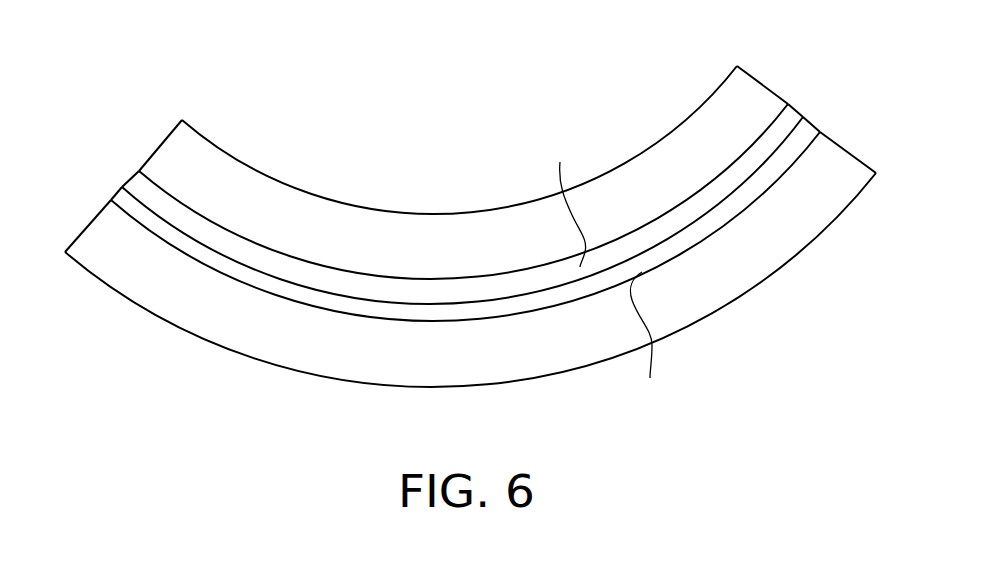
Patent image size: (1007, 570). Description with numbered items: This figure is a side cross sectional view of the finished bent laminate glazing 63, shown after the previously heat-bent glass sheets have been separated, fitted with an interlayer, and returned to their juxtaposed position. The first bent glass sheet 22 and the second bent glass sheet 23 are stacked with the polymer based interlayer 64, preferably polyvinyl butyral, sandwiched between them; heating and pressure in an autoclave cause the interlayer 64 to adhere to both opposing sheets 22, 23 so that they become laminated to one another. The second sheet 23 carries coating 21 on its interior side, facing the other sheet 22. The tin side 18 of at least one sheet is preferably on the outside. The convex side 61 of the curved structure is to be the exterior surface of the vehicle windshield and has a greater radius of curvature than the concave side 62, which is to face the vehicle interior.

The tin side 18 is at (237, 353).
The coating 21 is at (811, 131).
The first bent glass sheet 22 is at (707, 138).
The second bent glass sheet 23 is at (752, 270).
The convex side 61 is at (157, 316).
The concave side 62 is at (355, 205).
The bent laminate glazing 63 is at (270, 122).
The interlayer 64 is at (791, 117).